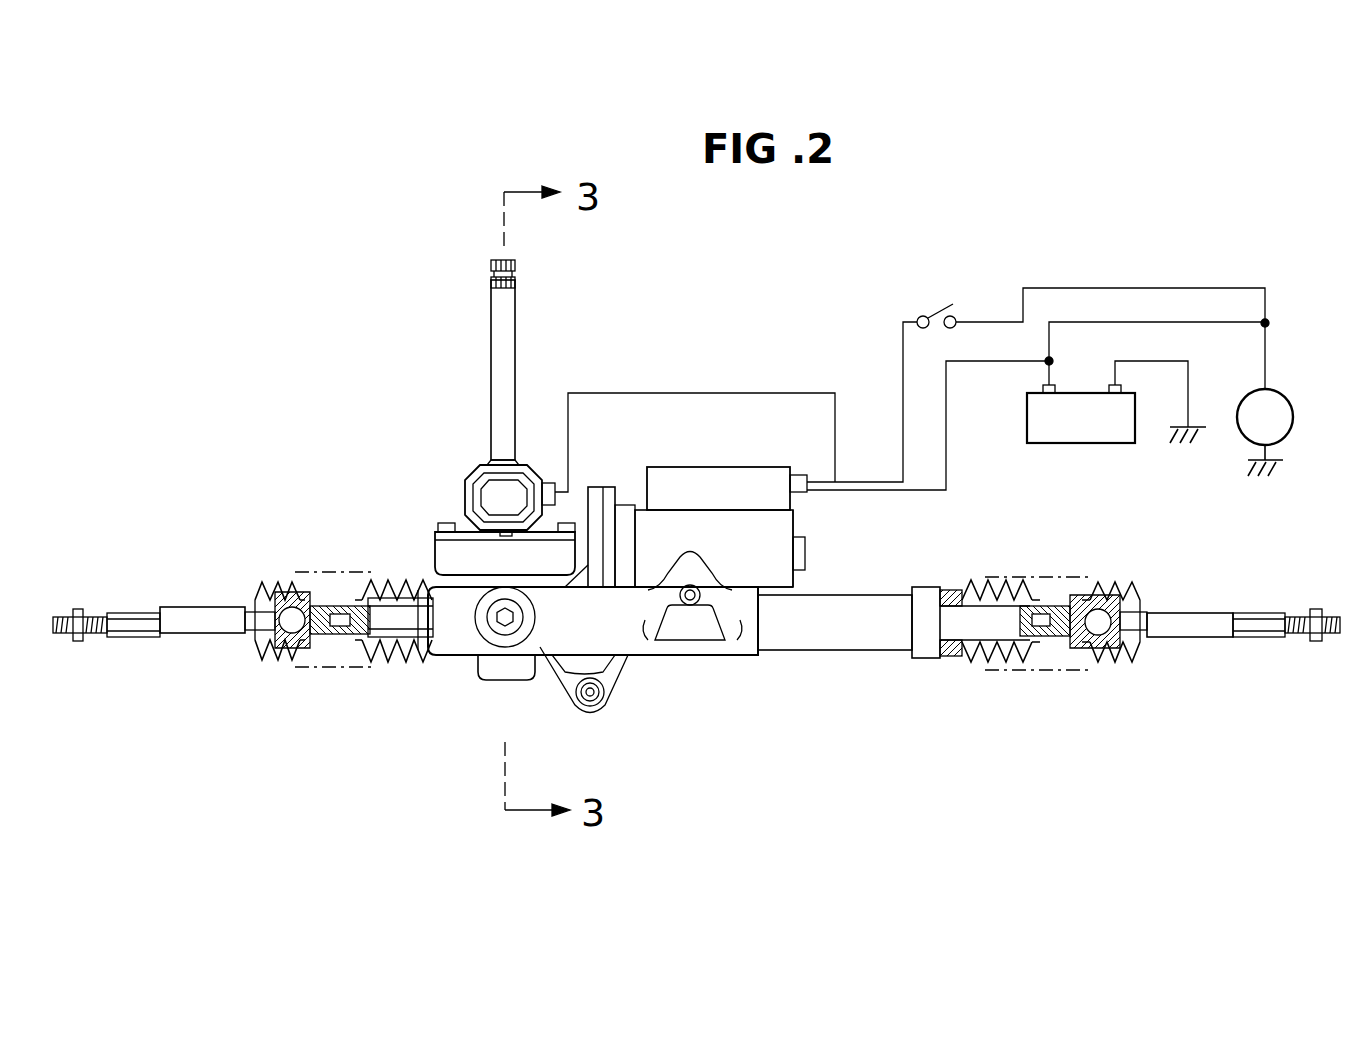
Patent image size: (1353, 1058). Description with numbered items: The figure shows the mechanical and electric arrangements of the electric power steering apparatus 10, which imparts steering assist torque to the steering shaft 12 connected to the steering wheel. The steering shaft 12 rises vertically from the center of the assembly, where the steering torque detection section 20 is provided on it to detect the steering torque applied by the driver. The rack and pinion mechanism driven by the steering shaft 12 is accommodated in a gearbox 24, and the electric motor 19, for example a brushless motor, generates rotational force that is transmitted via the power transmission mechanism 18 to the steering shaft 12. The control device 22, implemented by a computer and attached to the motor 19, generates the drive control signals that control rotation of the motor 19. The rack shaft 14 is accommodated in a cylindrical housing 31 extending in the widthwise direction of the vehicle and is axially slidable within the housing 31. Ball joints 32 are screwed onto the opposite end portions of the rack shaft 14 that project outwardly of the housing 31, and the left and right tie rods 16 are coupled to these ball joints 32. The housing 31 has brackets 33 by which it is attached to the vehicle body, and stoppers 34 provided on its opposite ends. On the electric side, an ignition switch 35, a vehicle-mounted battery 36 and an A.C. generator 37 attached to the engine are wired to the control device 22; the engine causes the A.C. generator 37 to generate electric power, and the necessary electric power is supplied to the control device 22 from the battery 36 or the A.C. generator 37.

The electric power steering apparatus 10 is at (455, 400).
The steering shaft 12 is at (510, 343).
The rack shaft 14 is at (953, 628).
The tie rods 16 is at (205, 632).
The power transmission mechanism 18 is at (450, 556).
The electric motor 19 is at (788, 582).
The steering torque detection section 20 is at (486, 492).
The control device 22 is at (707, 478).
The gearbox 24 is at (534, 688).
The cylindrical housing 31 is at (727, 650).
The ball joints 32 is at (292, 633).
The brackets 33 is at (688, 607).
The stoppers 34 is at (418, 657).
The ignition switch 35 is at (937, 308).
The vehicle-mounted battery 36 is at (1085, 440).
The A.C. generator (ACG) 37 is at (1283, 393).